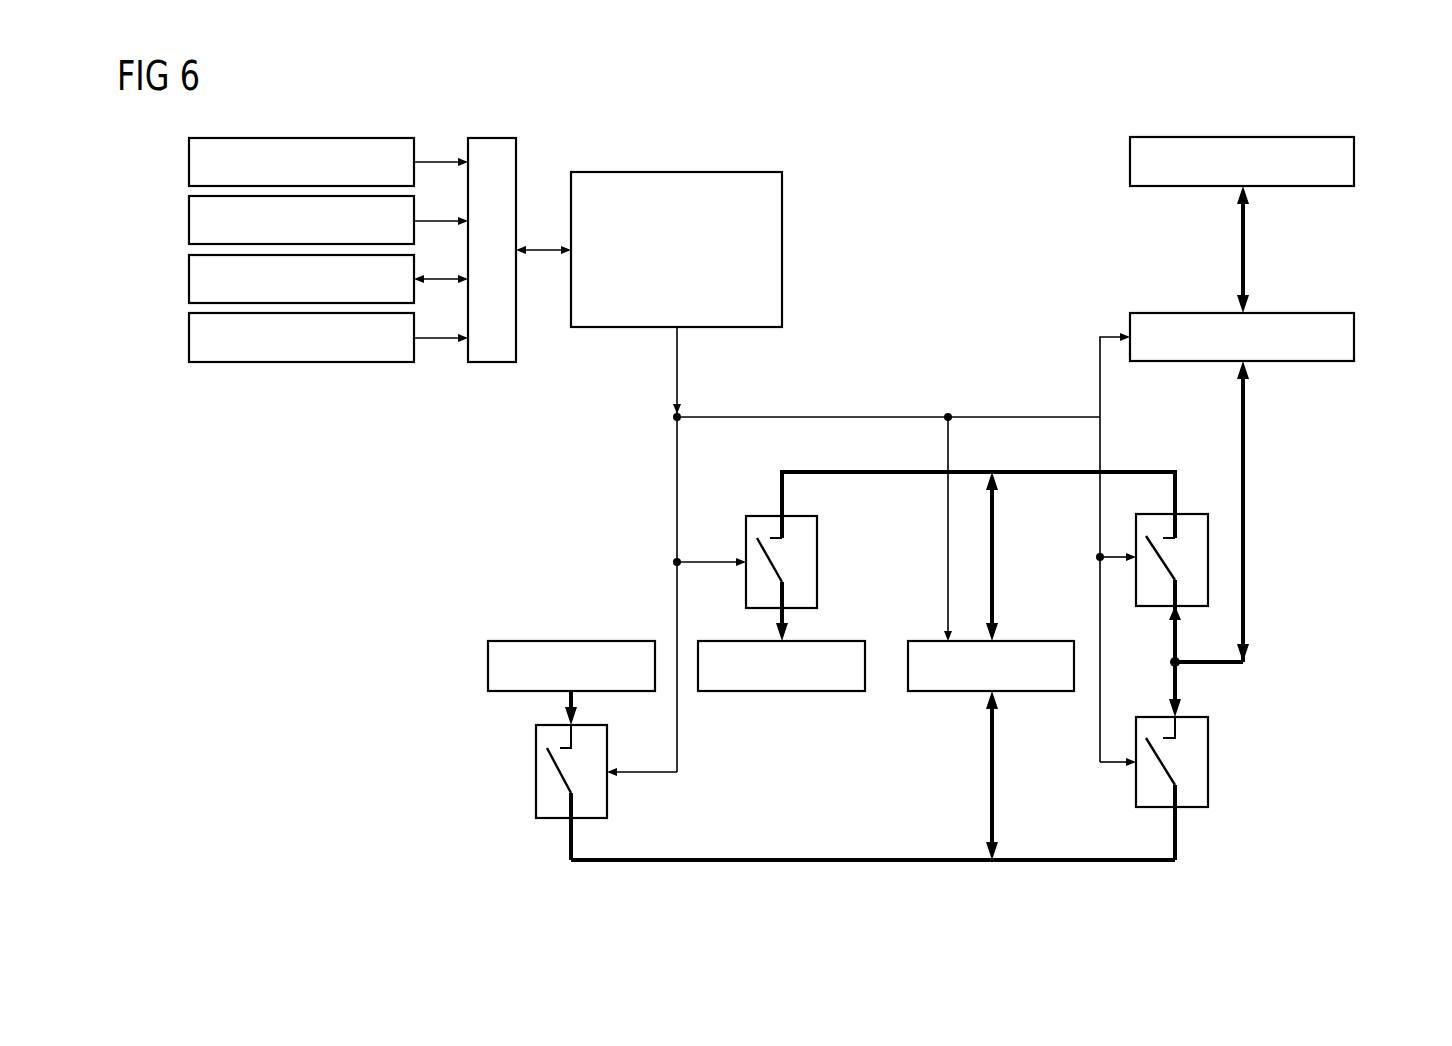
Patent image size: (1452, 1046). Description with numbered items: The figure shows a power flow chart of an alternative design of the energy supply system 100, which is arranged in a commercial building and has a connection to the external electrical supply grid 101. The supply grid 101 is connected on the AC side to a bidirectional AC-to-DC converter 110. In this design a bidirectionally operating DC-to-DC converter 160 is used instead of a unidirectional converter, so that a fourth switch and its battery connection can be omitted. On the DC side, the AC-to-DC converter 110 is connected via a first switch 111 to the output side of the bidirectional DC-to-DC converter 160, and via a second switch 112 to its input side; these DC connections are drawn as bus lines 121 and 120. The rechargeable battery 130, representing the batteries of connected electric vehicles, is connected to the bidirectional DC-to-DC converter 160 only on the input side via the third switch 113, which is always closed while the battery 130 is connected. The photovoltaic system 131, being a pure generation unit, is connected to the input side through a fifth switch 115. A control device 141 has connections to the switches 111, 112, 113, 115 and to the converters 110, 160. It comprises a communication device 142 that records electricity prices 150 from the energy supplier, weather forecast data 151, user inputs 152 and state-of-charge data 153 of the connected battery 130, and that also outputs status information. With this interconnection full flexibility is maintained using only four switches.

The energy supply system 100 is at (909, 98).
The external electrical supply grid 101 is at (1354, 161).
The bidirectional AC-to-DC converter 110 is at (1354, 337).
The first switch 111 is at (1208, 550).
The second switch 112 is at (1208, 766).
The third switch 113 is at (817, 561).
The fifth switch 115 is at (536, 779).
The second bus 120 is at (994, 852).
The first bus 121 is at (993, 471).
The rechargeable battery 130 is at (791, 692).
The photovoltaic system 131 is at (563, 641).
The control device 141 is at (671, 172).
The communication device 142 is at (486, 138).
The electricity prices 150 is at (189, 162).
The weather forecast data 151 is at (189, 221).
The user inputs 152 is at (189, 280).
The state-of-charge data 153 is at (189, 338).
The bidirectional DC-to-DC converter 160 is at (1047, 641).